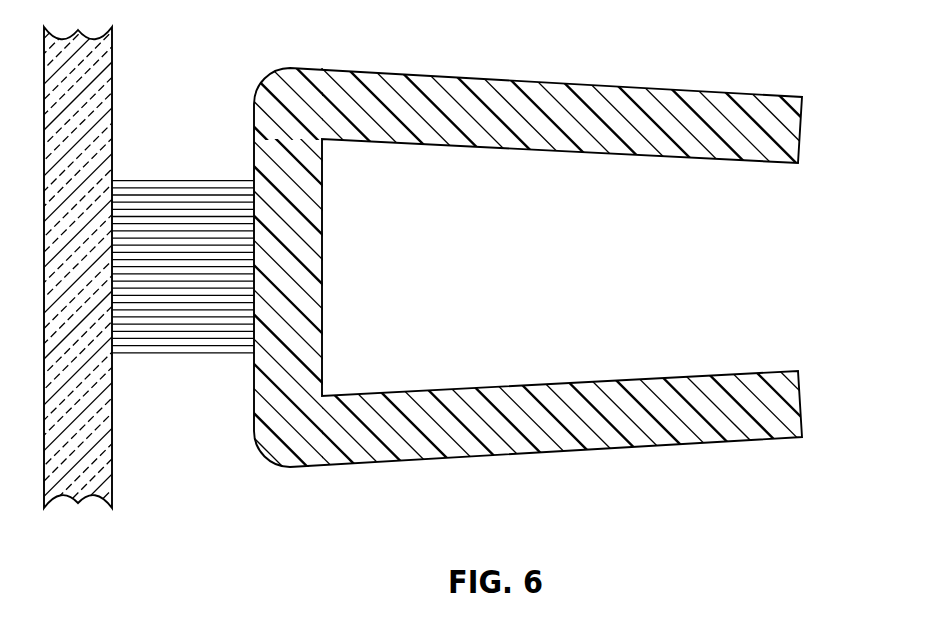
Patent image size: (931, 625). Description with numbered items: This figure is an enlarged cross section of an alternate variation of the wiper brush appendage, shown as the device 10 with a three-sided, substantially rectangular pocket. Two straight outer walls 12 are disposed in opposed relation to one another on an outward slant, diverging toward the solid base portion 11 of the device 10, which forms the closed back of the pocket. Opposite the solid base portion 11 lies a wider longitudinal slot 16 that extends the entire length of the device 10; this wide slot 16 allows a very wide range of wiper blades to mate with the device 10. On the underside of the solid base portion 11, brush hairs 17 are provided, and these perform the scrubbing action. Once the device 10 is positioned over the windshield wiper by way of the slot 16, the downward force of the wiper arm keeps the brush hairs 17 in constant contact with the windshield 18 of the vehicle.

The device 10 is at (465, 300).
The solid base portion 11 is at (272, 258).
The straight outer walls 12 is at (538, 90).
The wider longitudinal slot 16 is at (785, 225).
The brush hairs 17 is at (152, 330).
The windshield 18 is at (98, 113).